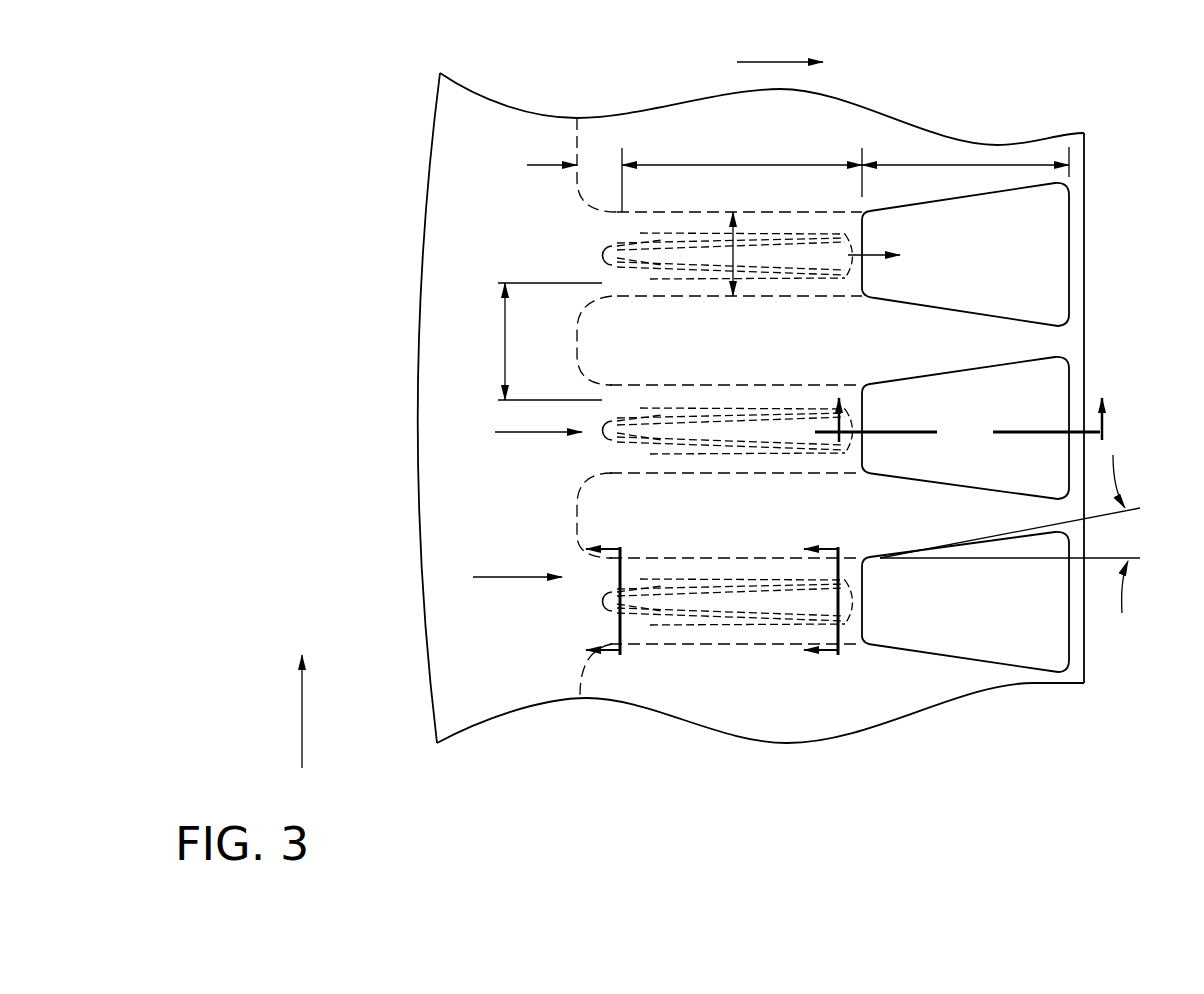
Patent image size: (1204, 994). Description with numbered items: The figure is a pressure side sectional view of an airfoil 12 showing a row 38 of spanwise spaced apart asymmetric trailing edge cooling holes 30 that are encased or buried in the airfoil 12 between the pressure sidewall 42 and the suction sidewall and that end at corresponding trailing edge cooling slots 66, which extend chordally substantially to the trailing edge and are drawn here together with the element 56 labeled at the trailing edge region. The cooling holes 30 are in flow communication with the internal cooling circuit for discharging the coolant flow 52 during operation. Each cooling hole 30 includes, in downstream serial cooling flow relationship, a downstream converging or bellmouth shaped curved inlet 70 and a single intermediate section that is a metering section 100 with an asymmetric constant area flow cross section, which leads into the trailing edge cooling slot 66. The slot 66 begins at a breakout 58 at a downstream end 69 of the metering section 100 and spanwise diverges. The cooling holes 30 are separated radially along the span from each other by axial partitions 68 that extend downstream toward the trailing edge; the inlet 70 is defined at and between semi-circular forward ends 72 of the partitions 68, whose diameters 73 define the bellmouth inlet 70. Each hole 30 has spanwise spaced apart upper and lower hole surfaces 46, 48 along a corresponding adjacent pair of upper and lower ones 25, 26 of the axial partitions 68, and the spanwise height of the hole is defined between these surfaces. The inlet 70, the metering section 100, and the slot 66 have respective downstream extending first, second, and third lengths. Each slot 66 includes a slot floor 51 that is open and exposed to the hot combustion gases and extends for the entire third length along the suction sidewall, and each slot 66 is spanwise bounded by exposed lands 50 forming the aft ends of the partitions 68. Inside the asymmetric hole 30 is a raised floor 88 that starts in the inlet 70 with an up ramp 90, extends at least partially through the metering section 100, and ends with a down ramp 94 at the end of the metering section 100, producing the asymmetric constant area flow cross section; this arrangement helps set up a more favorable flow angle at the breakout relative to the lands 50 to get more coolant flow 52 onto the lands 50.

The airfoil 12 is at (905, 122).
The upper one of the axial partitions 25 is at (652, 526).
The lower one of the axial partitions 26 is at (724, 693).
The trailing edge cooling hole 30 is at (713, 280).
The row 38 is at (767, 650).
The pressure sidewall 42 is at (505, 105).
The upper hole surface 46 is at (783, 560).
The lower hole surface 48 is at (757, 643).
The exposed lands 50 is at (938, 338).
The slot floor 51 is at (1042, 288).
The coolant flow 52 is at (872, 255).
The outer surface 56 is at (1072, 133).
The breakout 58 is at (863, 410).
The trailing edge cooling slot 66 is at (1055, 237).
The axial partition 68 is at (813, 351).
The downstream end 69 is at (863, 470).
The inlet 70 is at (560, 271).
The forward ends 72 is at (575, 180).
The diameters 73 is at (505, 350).
The raised floor 88 is at (738, 412).
The up ramp 90 is at (612, 243).
The down ramp 94 is at (865, 232).
The metering section 100 is at (620, 233).